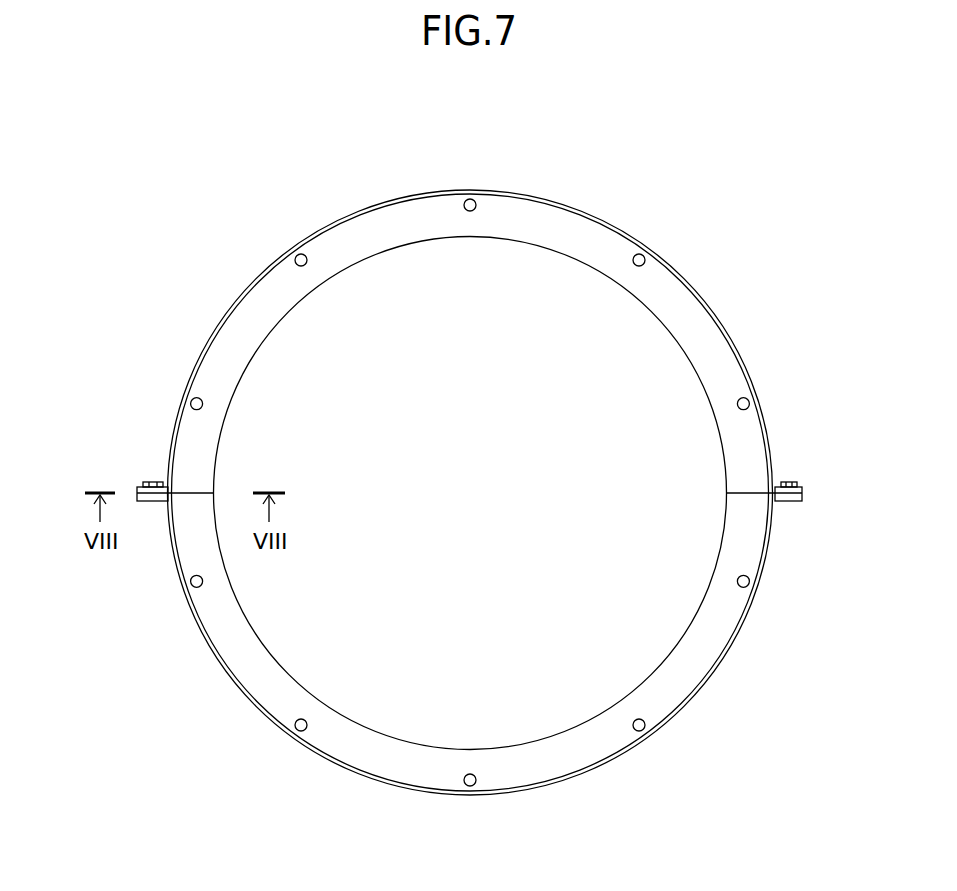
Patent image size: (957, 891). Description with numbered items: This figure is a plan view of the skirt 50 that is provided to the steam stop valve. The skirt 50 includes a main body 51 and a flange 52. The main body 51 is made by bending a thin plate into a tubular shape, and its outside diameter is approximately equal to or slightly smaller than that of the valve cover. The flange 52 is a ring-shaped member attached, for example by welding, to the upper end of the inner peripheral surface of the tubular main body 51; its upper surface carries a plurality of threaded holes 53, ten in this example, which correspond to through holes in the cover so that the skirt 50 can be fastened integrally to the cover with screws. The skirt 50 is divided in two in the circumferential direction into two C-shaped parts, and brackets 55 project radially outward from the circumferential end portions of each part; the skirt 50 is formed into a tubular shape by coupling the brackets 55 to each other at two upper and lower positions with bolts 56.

The skirt 50 is at (477, 469).
The main body 51 is at (743, 355).
The flange 52 is at (455, 238).
The threaded holes 53 is at (644, 728).
The brackets 55 is at (137, 490).
The bolts 56 is at (149, 482).